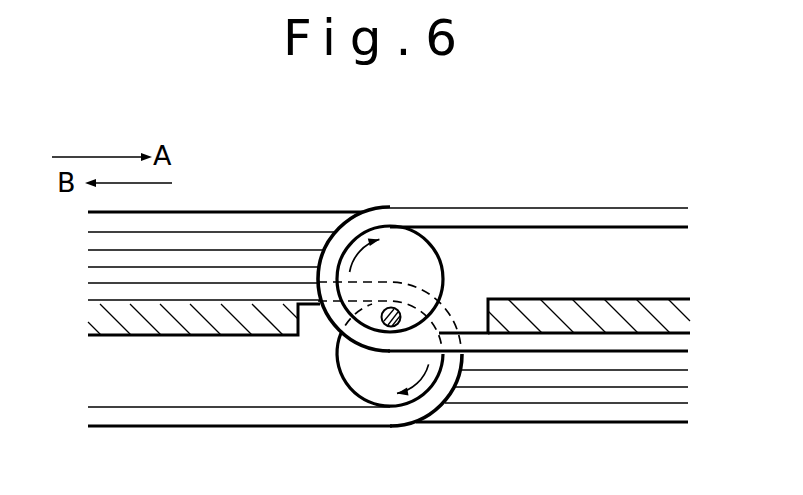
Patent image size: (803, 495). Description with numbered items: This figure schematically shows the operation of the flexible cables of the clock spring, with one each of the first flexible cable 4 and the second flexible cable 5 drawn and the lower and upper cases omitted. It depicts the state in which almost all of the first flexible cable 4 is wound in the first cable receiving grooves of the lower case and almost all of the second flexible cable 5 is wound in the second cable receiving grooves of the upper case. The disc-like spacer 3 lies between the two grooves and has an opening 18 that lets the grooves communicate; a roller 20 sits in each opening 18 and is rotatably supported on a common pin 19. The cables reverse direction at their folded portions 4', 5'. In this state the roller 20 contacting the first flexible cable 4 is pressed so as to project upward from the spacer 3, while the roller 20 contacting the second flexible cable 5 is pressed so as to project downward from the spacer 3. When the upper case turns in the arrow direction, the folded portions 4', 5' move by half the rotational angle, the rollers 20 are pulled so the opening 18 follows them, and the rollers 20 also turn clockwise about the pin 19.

The spacer 3 is at (622, 313).
The first flexible cable 4 is at (503, 318).
The folded portion of first flexible cable 4' is at (380, 243).
The second flexible cable 5 is at (274, 318).
The folded portion of second flexible cable 5' is at (406, 404).
The opening 18 is at (309, 305).
The pin 19 is at (399, 310).
The roller 20 is at (404, 252).